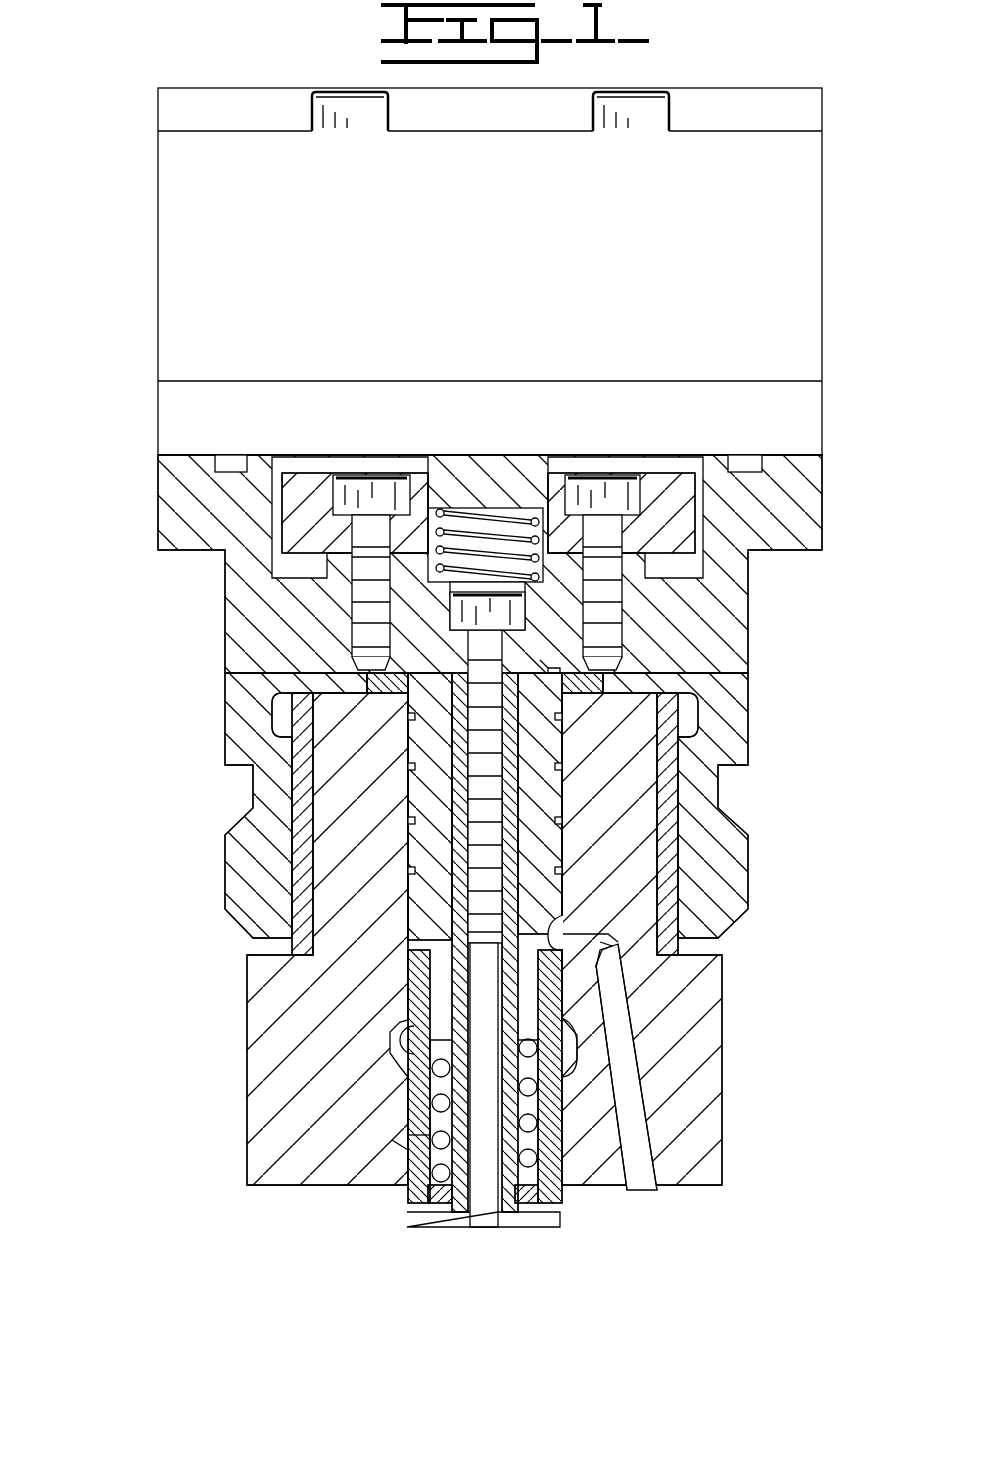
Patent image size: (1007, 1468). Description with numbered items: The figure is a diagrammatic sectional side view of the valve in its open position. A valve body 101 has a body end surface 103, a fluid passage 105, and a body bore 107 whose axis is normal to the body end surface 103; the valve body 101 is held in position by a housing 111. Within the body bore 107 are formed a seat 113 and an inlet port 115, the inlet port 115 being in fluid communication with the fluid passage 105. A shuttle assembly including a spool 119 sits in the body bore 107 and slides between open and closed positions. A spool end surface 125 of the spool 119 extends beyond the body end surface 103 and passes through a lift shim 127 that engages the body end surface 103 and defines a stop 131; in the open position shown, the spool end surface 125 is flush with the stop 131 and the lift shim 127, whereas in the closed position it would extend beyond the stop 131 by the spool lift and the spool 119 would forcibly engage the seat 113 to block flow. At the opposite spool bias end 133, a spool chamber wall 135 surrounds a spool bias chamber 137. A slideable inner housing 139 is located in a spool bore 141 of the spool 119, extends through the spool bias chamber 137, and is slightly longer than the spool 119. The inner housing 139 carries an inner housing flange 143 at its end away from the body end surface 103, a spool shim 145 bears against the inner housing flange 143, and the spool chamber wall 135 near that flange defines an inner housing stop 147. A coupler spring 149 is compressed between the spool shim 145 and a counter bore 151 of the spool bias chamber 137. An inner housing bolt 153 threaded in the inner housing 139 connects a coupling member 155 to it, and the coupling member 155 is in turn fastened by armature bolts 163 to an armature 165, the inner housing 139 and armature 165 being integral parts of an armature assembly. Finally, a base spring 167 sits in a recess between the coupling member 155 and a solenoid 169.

The valve body 101 is at (700, 1008).
The body end surface 103 is at (330, 674).
The fluid passage 105 is at (643, 1173).
The body bore 107 is at (385, 1143).
The housing 111 is at (733, 745).
The seat 113 is at (443, 1085).
The inlet port 115 is at (550, 933).
The spool 119 is at (427, 898).
The spool end surface 125 is at (548, 668).
The lift shim 127 is at (597, 685).
The stop 131 is at (600, 647).
The spool bias end 133 is at (403, 1135).
The spool chamber wall 135 is at (553, 1160).
The spool bias chamber 137 is at (415, 1103).
The inner housing 139 is at (513, 810).
The spool bore 141 is at (458, 838).
The inner housing flange 143 is at (430, 1218).
The spool shim 145 is at (455, 1212).
The inner housing stop 147 is at (415, 1220).
The coupler spring 149 is at (530, 1115).
The counter bore 151 is at (560, 1075).
The inner housing bolt 153 is at (472, 757).
The coupling member 155 is at (562, 603).
The armature bolts 163 is at (355, 613).
The armature 165 is at (667, 485).
The base spring 167 is at (468, 520).
The solenoid 169 is at (250, 414).